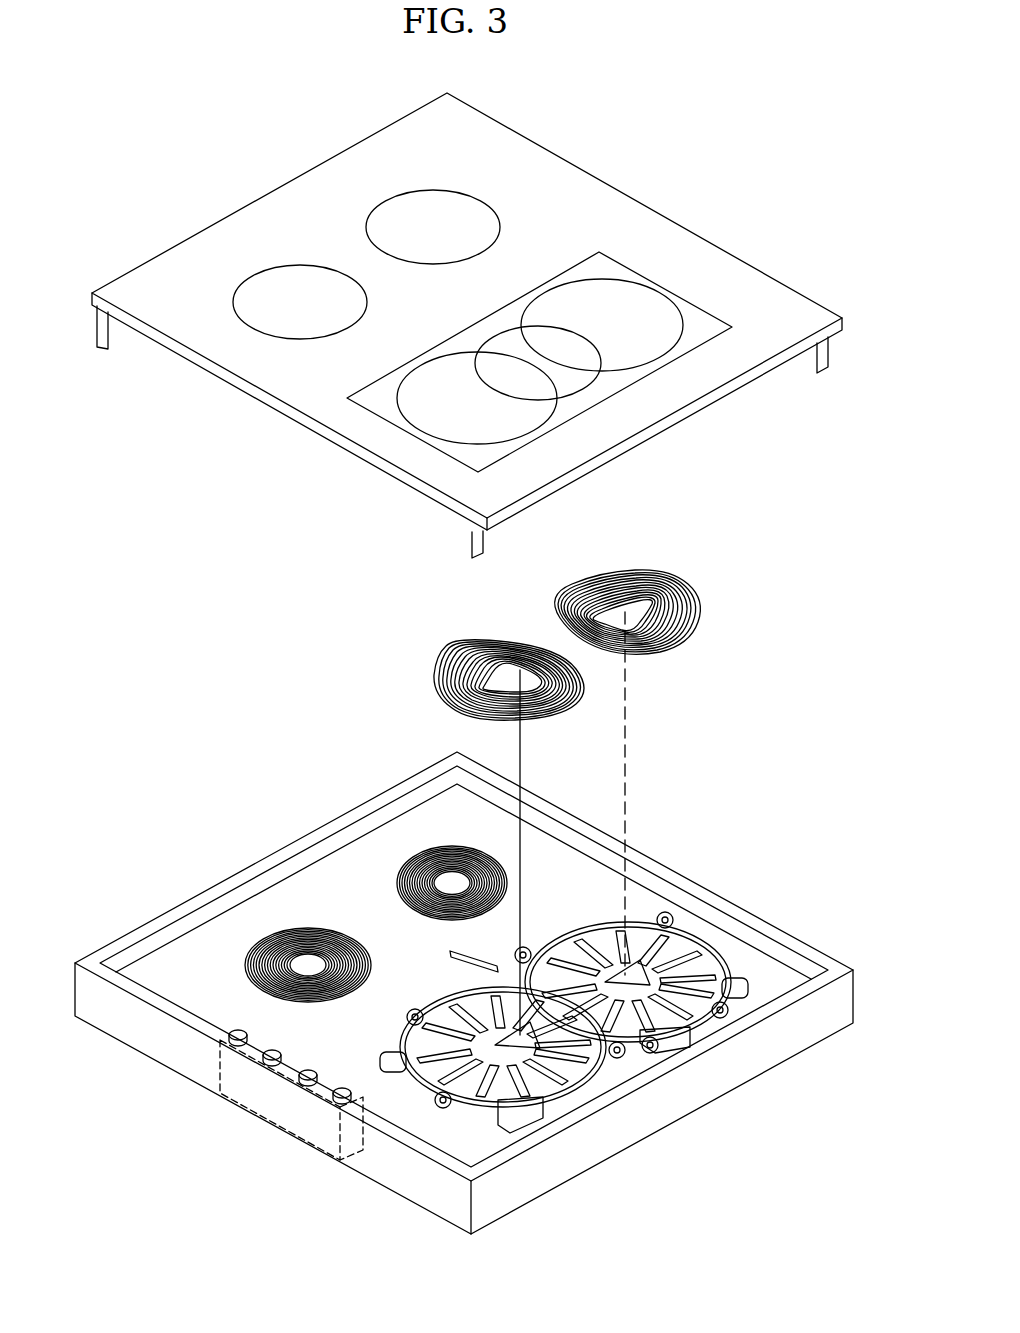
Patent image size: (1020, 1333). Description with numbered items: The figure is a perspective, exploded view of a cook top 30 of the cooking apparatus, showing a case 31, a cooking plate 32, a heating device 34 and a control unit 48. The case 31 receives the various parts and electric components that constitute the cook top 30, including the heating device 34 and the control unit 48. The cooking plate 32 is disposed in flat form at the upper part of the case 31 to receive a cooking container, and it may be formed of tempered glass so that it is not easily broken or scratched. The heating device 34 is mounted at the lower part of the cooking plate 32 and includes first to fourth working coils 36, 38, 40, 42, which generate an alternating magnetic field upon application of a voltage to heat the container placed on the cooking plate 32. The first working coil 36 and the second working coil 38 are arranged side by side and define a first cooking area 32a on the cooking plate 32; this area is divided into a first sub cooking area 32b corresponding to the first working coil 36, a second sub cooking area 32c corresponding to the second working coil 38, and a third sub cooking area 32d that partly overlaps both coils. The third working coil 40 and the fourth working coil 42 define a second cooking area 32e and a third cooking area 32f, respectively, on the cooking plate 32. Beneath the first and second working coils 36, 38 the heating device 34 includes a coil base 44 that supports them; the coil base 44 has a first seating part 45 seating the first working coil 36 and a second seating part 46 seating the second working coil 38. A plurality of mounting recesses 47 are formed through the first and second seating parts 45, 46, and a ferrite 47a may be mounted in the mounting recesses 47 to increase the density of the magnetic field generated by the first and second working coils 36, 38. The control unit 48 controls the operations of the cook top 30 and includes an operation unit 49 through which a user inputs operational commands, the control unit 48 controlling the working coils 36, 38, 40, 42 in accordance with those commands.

The cook top 30 is at (113, 1177).
The case 31 is at (760, 1063).
The cooking plate 32 is at (588, 181).
The first cooking area 32a is at (712, 315).
The first sub cooking area 32b is at (657, 295).
The second sub cooking area 32c is at (537, 428).
The third sub cooking area 32d is at (587, 387).
The second cooking area 32e is at (413, 200).
The third cooking area 32f is at (281, 271).
The heating device 34 is at (610, 1025).
The first working coil 36 is at (720, 626).
The second working coil 38 is at (428, 657).
The third working coil 40 is at (397, 883).
The fourth working coil 42 is at (246, 965).
The coil base 44 is at (742, 962).
The first seating part 45 is at (722, 930).
The second seating part 46 is at (480, 1063).
The mounting recesses 47 is at (460, 993).
The ferrite 47a is at (452, 955).
The control unit 48 is at (240, 1098).
The operation unit 49 is at (341, 1099).